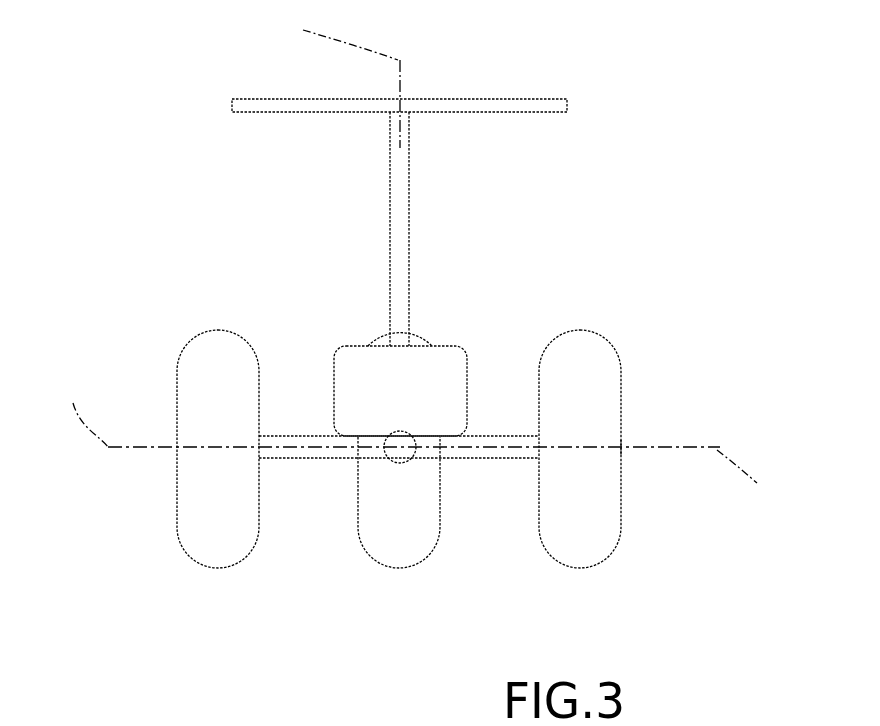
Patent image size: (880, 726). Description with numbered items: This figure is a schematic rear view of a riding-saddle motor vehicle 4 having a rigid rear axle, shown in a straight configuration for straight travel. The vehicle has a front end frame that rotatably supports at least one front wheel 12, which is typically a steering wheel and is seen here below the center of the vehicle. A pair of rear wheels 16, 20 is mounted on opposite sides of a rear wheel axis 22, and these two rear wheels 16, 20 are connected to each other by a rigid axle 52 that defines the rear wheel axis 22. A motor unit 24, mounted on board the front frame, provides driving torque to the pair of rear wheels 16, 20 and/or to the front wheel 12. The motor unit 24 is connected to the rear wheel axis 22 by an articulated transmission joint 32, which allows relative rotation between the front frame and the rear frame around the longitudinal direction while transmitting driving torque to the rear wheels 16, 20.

The riding-saddle motor vehicle 4 is at (730, 158).
The front wheel 12 is at (400, 555).
The rear wheel 16 is at (198, 366).
The rear wheel 20 is at (603, 388).
The rear wheel axis 22 is at (623, 450).
The motor unit 24 is at (447, 368).
The articulated transmission joint 32 is at (398, 452).
The rigid axle 52 is at (480, 452).